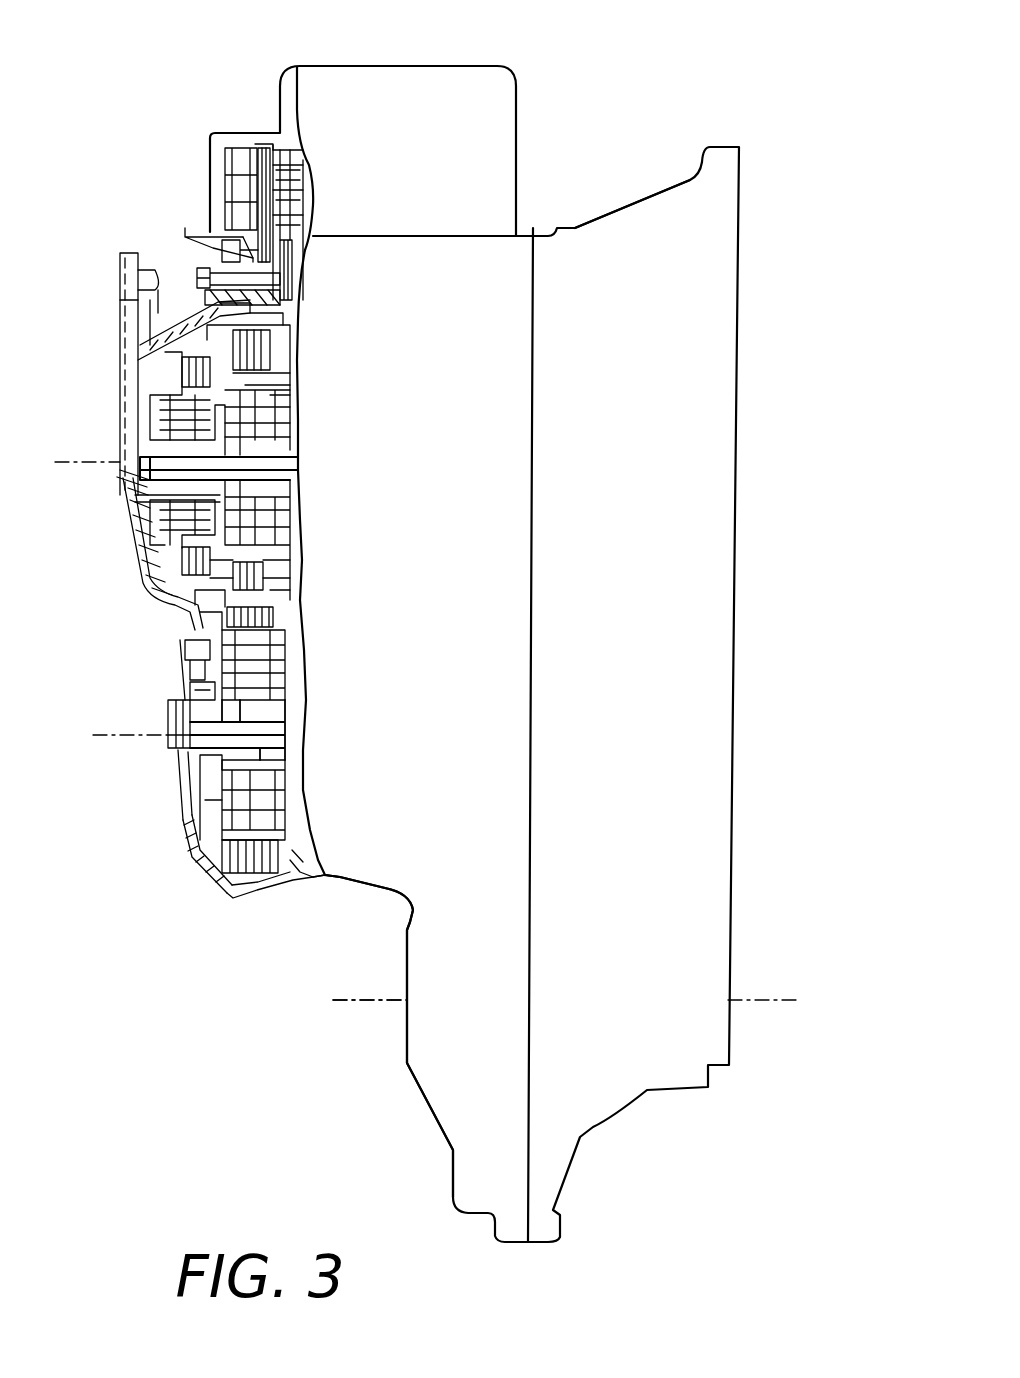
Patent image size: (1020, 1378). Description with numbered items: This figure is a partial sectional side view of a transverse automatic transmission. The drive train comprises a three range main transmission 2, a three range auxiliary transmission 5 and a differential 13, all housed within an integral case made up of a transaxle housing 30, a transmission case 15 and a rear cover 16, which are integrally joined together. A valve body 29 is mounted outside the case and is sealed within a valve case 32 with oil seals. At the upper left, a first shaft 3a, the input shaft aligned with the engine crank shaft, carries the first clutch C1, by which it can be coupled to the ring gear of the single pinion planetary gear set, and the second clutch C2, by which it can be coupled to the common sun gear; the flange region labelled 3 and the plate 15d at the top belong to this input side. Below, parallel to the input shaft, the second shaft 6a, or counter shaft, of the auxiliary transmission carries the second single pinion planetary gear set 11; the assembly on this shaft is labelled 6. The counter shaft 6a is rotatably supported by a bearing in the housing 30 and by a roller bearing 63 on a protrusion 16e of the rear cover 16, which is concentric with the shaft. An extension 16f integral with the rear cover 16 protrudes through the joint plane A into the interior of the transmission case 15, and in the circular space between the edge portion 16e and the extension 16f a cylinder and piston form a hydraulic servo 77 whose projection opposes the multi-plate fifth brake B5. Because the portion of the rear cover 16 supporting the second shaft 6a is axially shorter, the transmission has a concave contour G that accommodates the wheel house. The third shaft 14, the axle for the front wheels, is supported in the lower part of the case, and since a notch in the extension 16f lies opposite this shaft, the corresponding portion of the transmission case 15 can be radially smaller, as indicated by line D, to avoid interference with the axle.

The valve case 32 is at (290, 65).
The valve body 29 is at (240, 148).
The flange plate 15d is at (215, 232).
The main transmission 2 is at (178, 275).
The transaxle housing 30 is at (617, 220).
The first clutch C1 is at (297, 328).
The second clutch C2 is at (297, 368).
The input shaft flange 3 is at (100, 440).
The first shaft 3a is at (297, 457).
The rear cover 16 is at (160, 478).
The second single pinion planetary gear set 11 is at (293, 620).
The protrusion 16e is at (190, 660).
The bearing 63 is at (180, 690).
The second shaft 6a is at (280, 717).
The counter shaft assembly 6 is at (147, 730).
The concave portion G is at (170, 783).
The extension 16f is at (300, 870).
The line D is at (320, 873).
The hydraulic servo 77 is at (190, 833).
The joint plane A is at (243, 887).
The fifth brake B5 is at (250, 880).
The auxiliary transmission 5 is at (328, 880).
The transmission case 15 is at (387, 878).
The third shaft 14 is at (352, 1003).
The differential 13 is at (418, 1093).